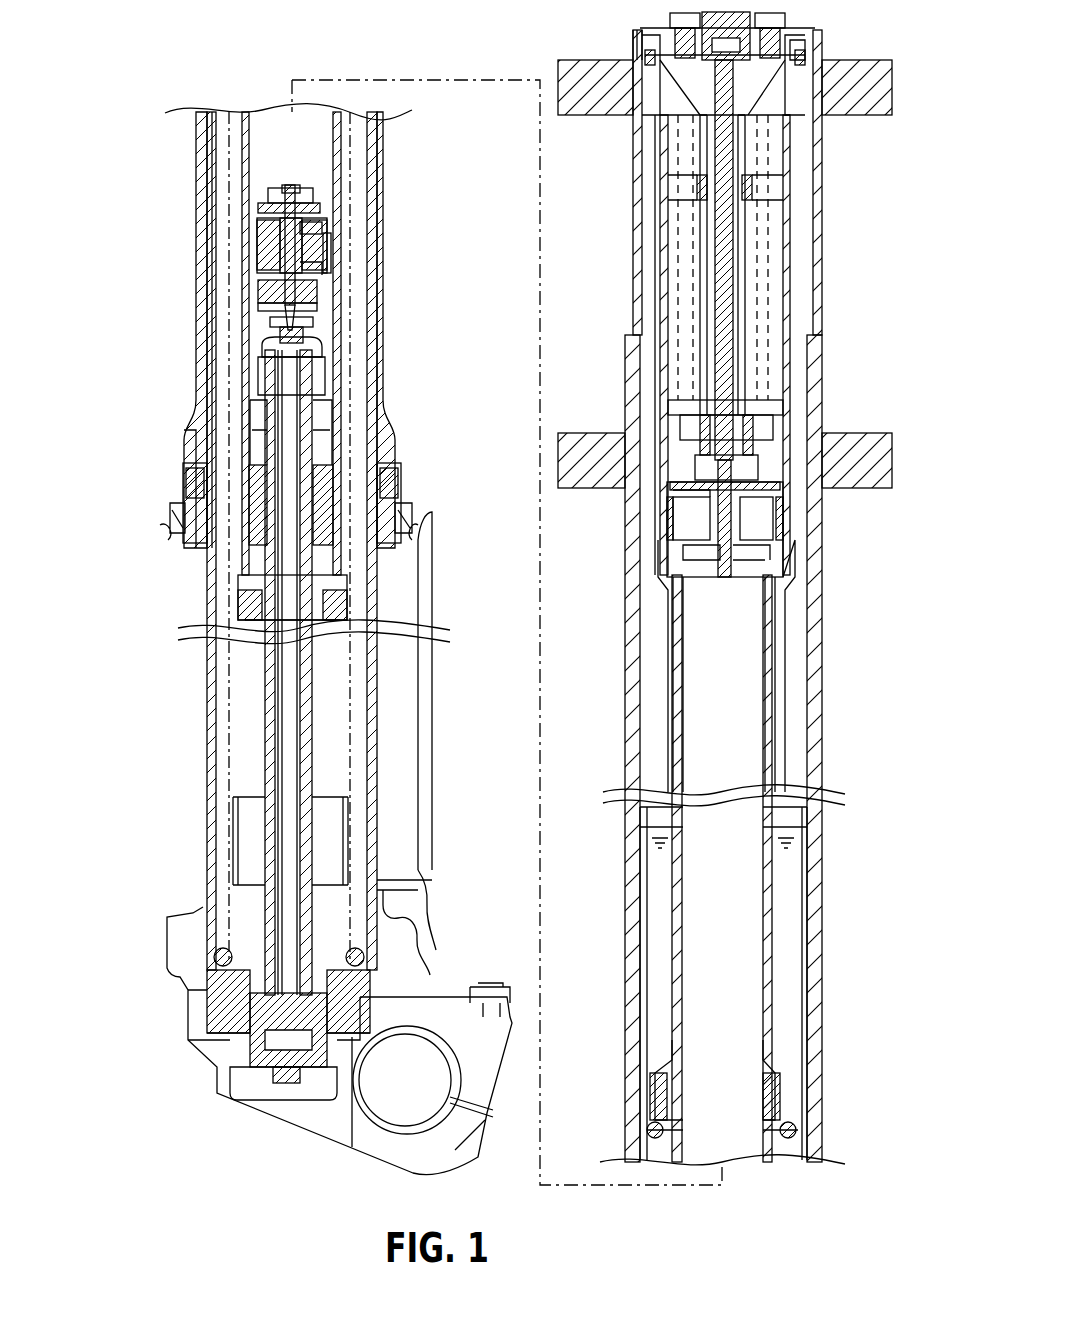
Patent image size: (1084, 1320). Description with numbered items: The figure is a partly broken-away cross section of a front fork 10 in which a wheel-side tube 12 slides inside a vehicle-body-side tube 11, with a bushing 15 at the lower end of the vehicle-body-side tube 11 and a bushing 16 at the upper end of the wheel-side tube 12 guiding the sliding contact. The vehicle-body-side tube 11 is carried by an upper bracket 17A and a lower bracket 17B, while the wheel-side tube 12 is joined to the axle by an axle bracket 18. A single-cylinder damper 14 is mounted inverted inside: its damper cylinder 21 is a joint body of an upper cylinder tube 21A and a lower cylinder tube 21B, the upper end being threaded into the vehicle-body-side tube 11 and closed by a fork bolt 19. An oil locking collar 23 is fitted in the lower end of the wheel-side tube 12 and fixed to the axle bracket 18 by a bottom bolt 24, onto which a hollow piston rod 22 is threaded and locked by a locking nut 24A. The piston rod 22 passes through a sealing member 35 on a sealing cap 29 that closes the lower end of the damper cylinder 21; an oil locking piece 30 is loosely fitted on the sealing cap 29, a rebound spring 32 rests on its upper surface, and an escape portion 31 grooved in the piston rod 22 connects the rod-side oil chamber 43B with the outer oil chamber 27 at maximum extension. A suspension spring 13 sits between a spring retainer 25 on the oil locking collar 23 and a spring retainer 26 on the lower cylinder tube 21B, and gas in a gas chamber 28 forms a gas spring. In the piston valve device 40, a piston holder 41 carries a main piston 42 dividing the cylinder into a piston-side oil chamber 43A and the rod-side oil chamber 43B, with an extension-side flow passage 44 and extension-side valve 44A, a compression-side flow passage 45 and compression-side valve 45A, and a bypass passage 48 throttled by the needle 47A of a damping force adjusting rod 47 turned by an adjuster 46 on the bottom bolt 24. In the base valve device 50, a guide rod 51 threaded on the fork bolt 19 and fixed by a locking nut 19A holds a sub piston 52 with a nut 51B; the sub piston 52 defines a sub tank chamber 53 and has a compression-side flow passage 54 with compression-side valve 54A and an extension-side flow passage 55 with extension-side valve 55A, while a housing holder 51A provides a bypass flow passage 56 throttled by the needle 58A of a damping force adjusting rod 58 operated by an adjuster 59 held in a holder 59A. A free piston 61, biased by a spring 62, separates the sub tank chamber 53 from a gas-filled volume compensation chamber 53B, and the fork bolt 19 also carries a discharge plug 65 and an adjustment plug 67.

The front fork 10 is at (210, 92).
The vehicle-body-side tube 11 is at (198, 125).
The wheel-side tube 12 is at (210, 150).
The suspension spring 13 is at (178, 979).
The damper 14 is at (263, 170).
The bushing 15 is at (198, 439).
The bushing 16 is at (642, 879).
The upper bracket 17A is at (603, 115).
The lower bracket 17B is at (595, 433).
The axle bracket 18 is at (455, 1010).
The fork bolt 19 is at (640, 45).
The locking nut 19A is at (760, 184).
The damper cylinder 21 is at (246, 224).
The upper cylinder tube 21A is at (662, 329).
The lower cylinder tube 21B is at (248, 267).
The piston rod 22 is at (275, 419).
The oil locking collar 23 is at (230, 814).
The bottom bolt 24 is at (248, 1082).
The locking nut 24A is at (400, 949).
The spring retainer 25 is at (185, 1005).
The spring retainer 26 is at (645, 1109).
The oil chamber 27 is at (243, 614).
The gas chamber 28 is at (650, 682).
The sealing cap 29 is at (333, 614).
The oil locking piece 30 is at (340, 579).
The escape portion 31 is at (248, 469).
The rebound spring 32 is at (247, 369).
The sealing member 35 is at (327, 489).
The piston valve device 40 is at (305, 176).
The piston holder 41 is at (375, 399).
The main piston 42 is at (305, 239).
The piston-side oil chamber 43A is at (295, 136).
The rod-side oil chamber 43B is at (350, 339).
The extension-side flow passage 44 is at (262, 242).
The extension-side valve 44A is at (263, 209).
The compression-side flow passage 45 is at (320, 227).
The compression-side valve 45A is at (330, 272).
The adjuster 46 is at (281, 1090).
The damping force adjusting rod 47 is at (290, 369).
The needle 47A is at (320, 374).
The bypass passage 48 is at (320, 309).
The base valve device 50 is at (780, 559).
The guide rod 51 is at (737, 236).
The housing holder 51A is at (680, 579).
The nut 51B is at (745, 584).
The sub piston 52 is at (780, 529).
The sub tank chamber 53 is at (790, 492).
The volume compensation chamber 53B is at (748, 294).
The compression-side flow passage 54 is at (690, 529).
The compression-side valve 54A is at (688, 496).
The extension-side flow passage 55 is at (760, 519).
The extension-side valve 55A is at (755, 564).
The bypass flow passage 56 is at (750, 424).
The damping force adjusting rod 58 is at (735, 319).
The needle 58A is at (730, 414).
The adjuster 59 is at (745, 23).
The holder 59A is at (690, 27).
The free piston 61 is at (750, 379).
The spring 62 is at (775, 347).
The discharge plug 65 is at (790, 45).
The adjustment plug 67 is at (630, 31).